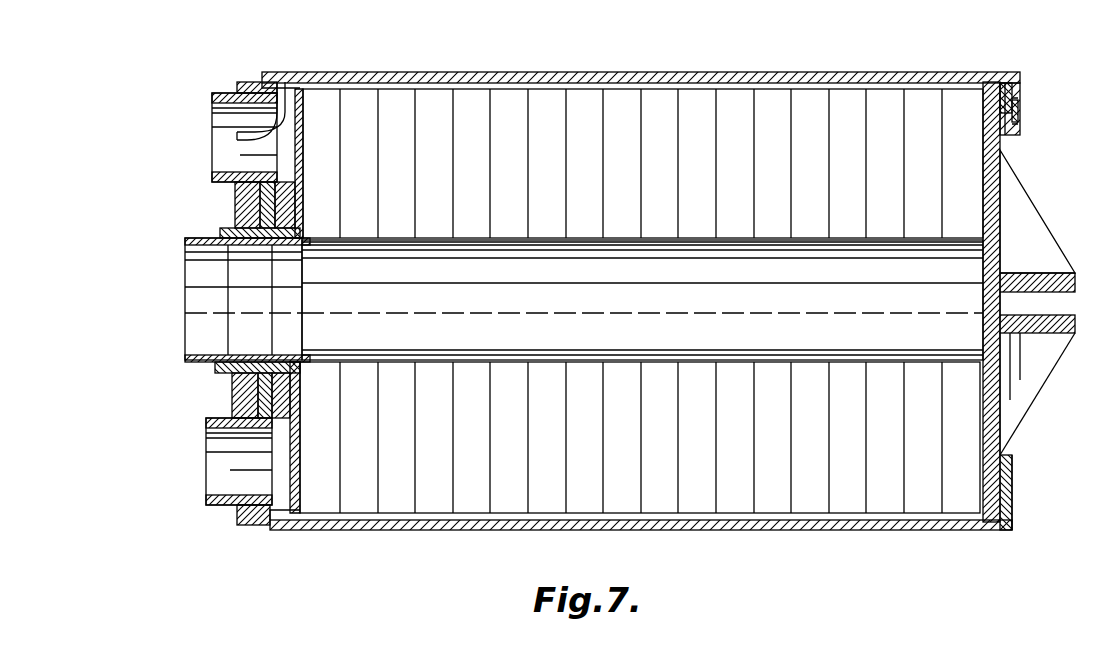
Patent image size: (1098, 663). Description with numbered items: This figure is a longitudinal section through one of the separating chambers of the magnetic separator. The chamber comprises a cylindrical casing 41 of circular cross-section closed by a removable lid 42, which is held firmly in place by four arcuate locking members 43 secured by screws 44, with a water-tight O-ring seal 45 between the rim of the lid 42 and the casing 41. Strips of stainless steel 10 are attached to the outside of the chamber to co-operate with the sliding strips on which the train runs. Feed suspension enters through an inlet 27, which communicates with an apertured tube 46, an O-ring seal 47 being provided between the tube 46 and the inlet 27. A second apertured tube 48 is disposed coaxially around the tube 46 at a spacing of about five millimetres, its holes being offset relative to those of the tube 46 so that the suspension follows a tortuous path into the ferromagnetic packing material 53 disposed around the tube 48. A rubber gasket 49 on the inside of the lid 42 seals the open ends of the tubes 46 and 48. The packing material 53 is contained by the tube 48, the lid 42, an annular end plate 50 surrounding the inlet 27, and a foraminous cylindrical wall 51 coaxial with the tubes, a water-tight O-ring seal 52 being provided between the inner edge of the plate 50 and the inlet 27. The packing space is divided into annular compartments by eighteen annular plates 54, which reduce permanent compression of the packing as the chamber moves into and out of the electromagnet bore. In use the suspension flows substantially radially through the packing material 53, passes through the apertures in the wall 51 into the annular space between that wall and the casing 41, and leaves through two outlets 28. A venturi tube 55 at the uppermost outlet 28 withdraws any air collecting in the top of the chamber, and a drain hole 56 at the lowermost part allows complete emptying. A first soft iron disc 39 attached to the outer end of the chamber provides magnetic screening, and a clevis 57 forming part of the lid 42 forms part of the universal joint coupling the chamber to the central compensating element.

The strips of stainless steel 10 is at (545, 73).
The inlet 27 is at (172, 296).
The outlets 28 is at (210, 138).
The first soft iron disc 39 is at (245, 218).
The casing 41 is at (662, 530).
The removable lid 42 is at (991, 425).
The arcuate locking members 43 is at (1003, 500).
The screws 44 is at (1018, 110).
The O-ring seal 45 is at (995, 85).
The apertured tube 46 is at (664, 240).
The O-ring seal 47 is at (295, 368).
The second apertured tube 48 is at (850, 240).
The rubber gasket 49 is at (985, 347).
The annular end plate 50 is at (292, 200).
The foraminous cylindrical wall 51 is at (300, 86).
The O-ring seal 52 is at (290, 385).
The ferromagnetic packing material 53 is at (598, 196).
The annular plates 54 is at (523, 478).
The venturi tube 55 is at (265, 84).
The drain hole 56 is at (250, 512).
The clevis 57 is at (1045, 247).